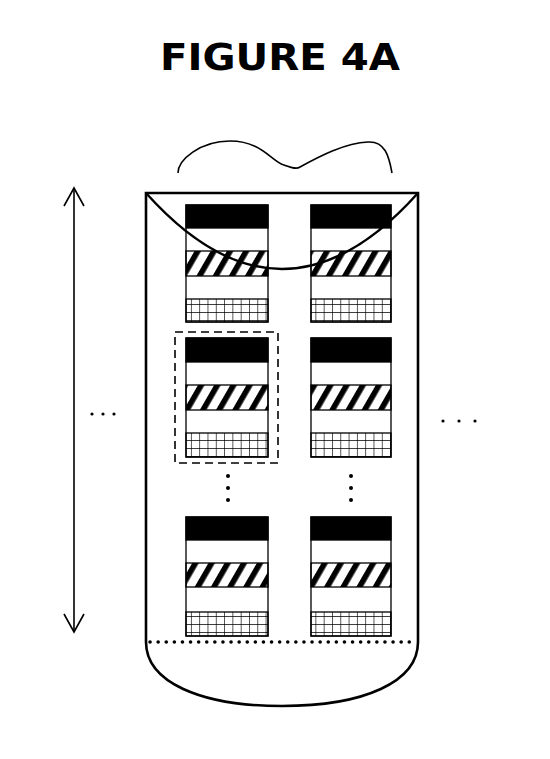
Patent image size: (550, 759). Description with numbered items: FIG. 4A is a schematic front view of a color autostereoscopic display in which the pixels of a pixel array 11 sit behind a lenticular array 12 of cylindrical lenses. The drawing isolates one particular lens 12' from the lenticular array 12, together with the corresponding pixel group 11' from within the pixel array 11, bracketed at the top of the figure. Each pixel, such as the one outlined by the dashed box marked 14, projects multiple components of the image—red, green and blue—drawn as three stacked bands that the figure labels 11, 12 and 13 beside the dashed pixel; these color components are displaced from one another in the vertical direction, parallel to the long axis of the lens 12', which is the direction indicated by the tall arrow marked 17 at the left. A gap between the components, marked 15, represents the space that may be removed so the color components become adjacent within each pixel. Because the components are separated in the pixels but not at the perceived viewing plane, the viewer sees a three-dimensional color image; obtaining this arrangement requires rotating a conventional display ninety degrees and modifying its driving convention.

The pixel array 11 is at (208, 354).
The lenticular array 12 is at (208, 397).
The second electrode layer 13 is at (186, 434).
The pixel unit 14 is at (175, 452).
The pixel stack 15 is at (268, 404).
The pixel array height 17 is at (67, 389).
The pixel group 11' is at (285, 152).
The lens 12' is at (320, 449).